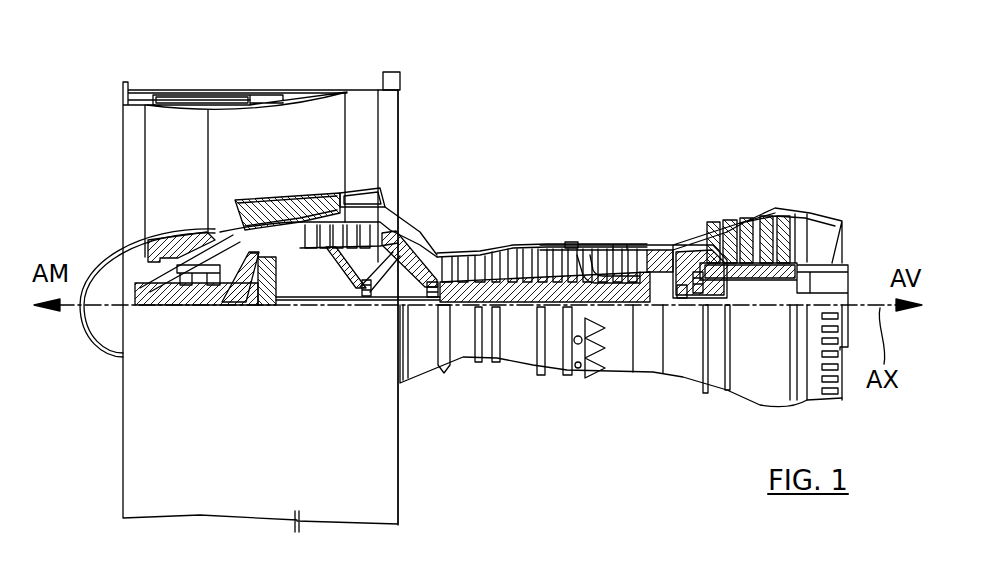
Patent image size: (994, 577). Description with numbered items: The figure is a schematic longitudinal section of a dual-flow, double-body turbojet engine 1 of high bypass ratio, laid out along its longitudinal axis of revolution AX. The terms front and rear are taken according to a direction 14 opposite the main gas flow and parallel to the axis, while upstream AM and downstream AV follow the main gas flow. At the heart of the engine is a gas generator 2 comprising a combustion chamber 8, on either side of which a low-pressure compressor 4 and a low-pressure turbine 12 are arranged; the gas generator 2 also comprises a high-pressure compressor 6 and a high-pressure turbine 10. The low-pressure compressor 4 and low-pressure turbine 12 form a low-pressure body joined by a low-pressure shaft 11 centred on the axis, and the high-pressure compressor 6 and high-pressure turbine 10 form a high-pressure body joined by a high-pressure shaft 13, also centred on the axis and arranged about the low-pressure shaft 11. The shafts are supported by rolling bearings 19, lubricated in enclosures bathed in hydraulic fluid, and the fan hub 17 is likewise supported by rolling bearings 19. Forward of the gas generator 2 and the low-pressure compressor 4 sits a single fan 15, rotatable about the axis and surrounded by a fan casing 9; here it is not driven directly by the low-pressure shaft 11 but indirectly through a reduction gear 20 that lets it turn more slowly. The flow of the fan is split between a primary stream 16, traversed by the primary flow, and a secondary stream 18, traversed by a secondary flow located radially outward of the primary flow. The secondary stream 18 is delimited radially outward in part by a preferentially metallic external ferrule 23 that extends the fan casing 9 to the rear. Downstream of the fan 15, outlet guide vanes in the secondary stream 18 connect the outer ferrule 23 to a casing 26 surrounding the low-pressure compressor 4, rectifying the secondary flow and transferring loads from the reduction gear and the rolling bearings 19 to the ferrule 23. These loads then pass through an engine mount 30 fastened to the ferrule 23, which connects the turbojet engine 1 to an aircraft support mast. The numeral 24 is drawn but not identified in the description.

The turbojet engine 1 is at (644, 142).
The gas generator 2 is at (514, 388).
The low-pressure compressor 4 is at (363, 220).
The high-pressure compressor 6 is at (530, 290).
The combustion chamber 8 is at (598, 265).
The fan casing 9 is at (222, 97).
The high-pressure turbine 10 is at (662, 258).
The low-pressure shaft 11 is at (418, 308).
The low-pressure turbine 12 is at (757, 230).
The high-pressure shaft 13 is at (660, 305).
The direction 14 is at (630, 98).
The fan 15 is at (162, 100).
The primary stream 16 is at (425, 262).
The fan hub 17 is at (160, 298).
The secondary stream 18 is at (318, 307).
The rolling bearings 19 is at (213, 285).
The reduction gear 20 is at (268, 298).
The external ferrule 23 is at (320, 95).
The inter-duct casing 24 is at (360, 125).
The casing 26 is at (320, 215).
The engine mount 30 is at (393, 80).